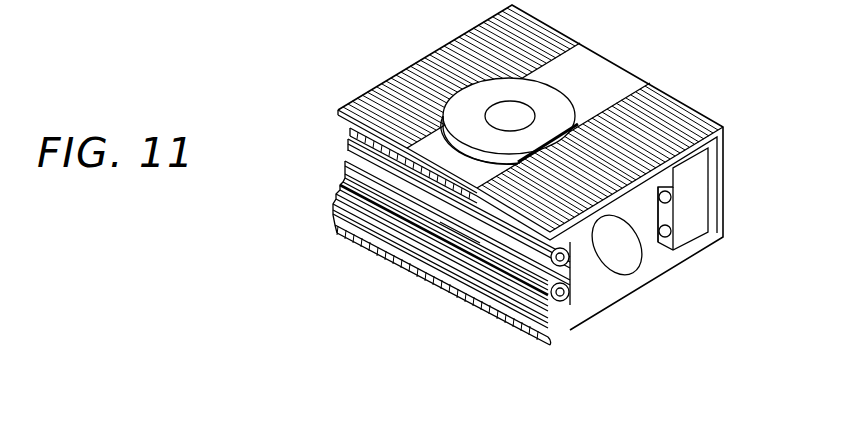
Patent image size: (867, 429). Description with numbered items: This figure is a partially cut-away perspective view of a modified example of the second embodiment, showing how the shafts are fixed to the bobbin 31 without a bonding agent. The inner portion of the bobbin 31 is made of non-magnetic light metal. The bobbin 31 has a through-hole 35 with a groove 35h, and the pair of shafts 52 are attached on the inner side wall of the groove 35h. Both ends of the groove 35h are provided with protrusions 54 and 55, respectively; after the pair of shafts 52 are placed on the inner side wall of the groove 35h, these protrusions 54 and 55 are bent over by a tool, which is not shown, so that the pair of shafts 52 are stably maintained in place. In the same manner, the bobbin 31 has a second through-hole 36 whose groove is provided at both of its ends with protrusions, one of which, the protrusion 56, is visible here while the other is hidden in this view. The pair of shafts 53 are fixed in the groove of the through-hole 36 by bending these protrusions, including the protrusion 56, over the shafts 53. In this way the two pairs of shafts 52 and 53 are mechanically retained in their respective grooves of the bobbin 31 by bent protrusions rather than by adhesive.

The bobbin 31 is at (618, 77).
The through-hole 35 is at (493, 300).
The groove 35h is at (457, 213).
The through-hole 36 is at (723, 167).
The shafts 52 is at (572, 292).
The shafts 53 is at (672, 182).
The protrusion 54 is at (558, 284).
The protrusion 55 is at (358, 173).
The protrusion 56 is at (676, 223).